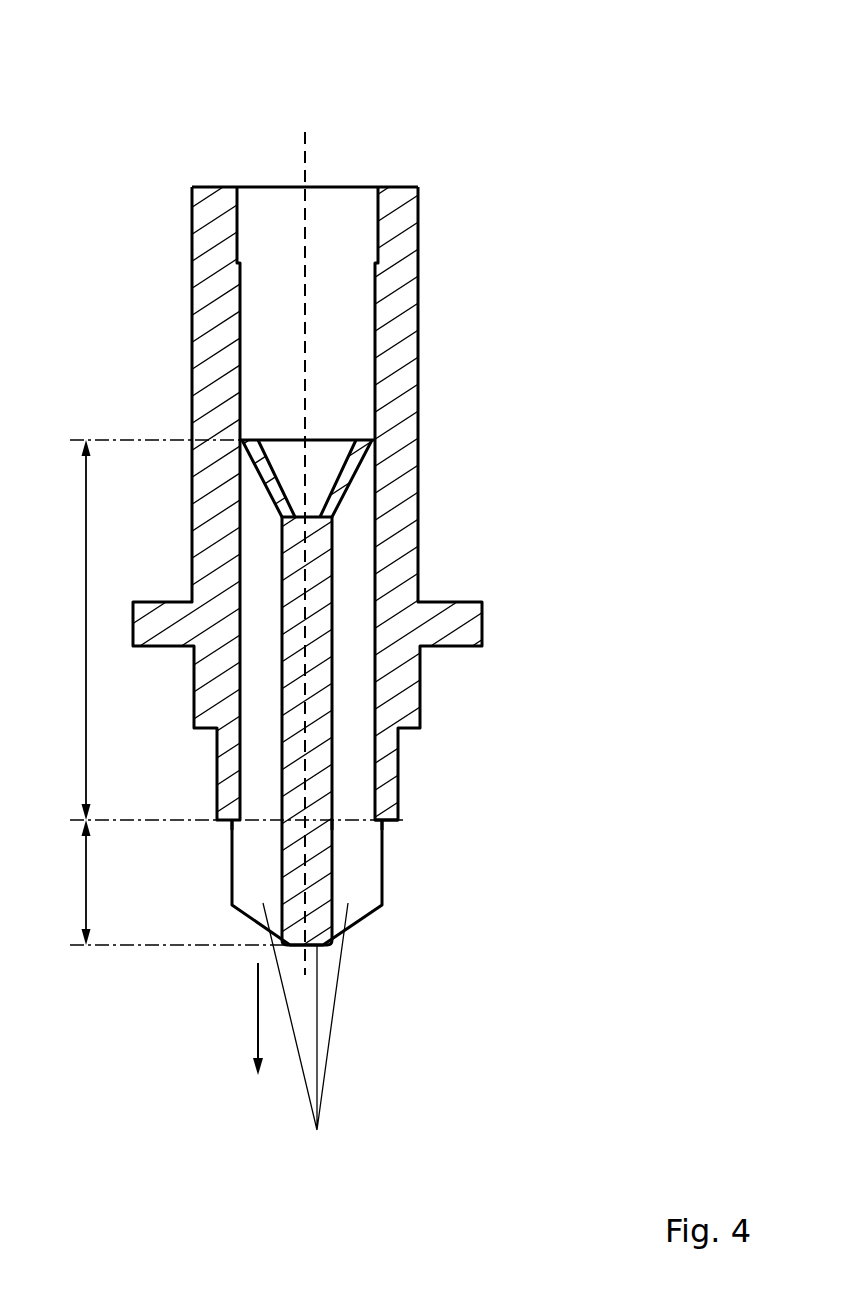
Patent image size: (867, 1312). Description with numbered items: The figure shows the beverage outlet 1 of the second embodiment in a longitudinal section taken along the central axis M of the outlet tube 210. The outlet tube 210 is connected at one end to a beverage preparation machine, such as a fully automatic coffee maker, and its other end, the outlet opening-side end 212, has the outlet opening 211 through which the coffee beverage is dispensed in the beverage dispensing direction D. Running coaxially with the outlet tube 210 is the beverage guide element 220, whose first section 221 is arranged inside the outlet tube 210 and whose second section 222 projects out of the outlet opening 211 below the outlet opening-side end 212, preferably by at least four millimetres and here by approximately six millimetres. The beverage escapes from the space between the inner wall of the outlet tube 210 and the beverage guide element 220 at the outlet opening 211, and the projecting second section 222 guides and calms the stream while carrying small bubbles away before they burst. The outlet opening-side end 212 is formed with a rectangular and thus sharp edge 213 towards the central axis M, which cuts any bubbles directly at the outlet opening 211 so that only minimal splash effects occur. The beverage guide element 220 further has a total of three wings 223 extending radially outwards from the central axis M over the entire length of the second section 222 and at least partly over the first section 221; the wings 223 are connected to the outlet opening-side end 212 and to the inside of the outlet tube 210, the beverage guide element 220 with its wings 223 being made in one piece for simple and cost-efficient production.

The beverage outlet 1 is at (435, 136).
The outlet tube 210 is at (418, 342).
The beverage guide element 220 is at (394, 948).
The first section 221 is at (62, 630).
The second section 222 is at (62, 882).
The outlet opening 211 is at (251, 837).
The outlet opening-side end 212 is at (393, 820).
The sharp edge 213 is at (373, 838).
The wings 223 is at (306, 1036).
The central axis M is at (305, 152).
The beverage dispensing direction D is at (247, 1019).